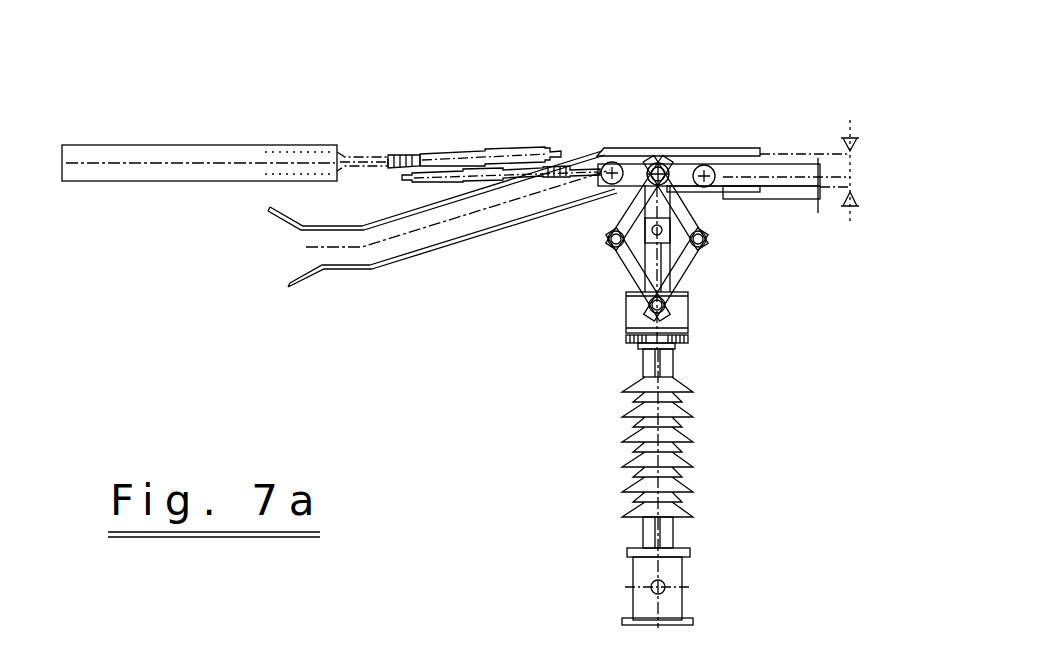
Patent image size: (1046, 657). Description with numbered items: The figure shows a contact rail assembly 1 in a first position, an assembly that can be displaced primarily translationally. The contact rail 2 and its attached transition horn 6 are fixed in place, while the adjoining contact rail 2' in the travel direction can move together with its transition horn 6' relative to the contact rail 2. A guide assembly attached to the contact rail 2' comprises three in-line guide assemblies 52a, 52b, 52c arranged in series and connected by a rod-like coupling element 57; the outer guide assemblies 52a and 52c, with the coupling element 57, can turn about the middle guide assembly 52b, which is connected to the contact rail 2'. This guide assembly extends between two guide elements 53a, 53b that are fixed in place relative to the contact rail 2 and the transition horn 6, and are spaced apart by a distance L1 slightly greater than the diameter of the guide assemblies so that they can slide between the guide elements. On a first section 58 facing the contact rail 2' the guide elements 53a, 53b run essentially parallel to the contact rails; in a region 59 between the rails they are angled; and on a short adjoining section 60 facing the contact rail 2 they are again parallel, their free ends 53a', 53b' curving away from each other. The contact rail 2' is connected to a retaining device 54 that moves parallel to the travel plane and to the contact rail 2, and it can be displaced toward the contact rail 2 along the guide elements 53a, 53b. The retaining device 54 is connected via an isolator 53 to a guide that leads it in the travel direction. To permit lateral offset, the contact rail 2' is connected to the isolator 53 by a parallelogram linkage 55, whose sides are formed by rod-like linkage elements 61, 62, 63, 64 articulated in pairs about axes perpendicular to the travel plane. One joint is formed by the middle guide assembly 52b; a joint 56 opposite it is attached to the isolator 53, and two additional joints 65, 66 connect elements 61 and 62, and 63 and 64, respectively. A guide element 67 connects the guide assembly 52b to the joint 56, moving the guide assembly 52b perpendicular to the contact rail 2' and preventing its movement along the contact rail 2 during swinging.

The contact rail assembly 1 is at (411, 125).
The contact rail 2 is at (199, 272).
The contact rail 2' is at (758, 217).
The transition horn 6 is at (474, 94).
The transition horn 6' is at (462, 194).
The guide assembly 52a is at (760, 153).
The guide assembly 52b is at (673, 170).
The guide assembly 52c is at (605, 158).
The isolator 53 is at (670, 493).
The guide element 53a is at (483, 125).
The free end 53a' is at (282, 303).
The guide element 53b is at (493, 254).
The free end 53b' is at (336, 332).
The retaining device 54 is at (580, 362).
The parallelogram linkage 55 is at (717, 362).
The joint 56 is at (626, 334).
The coupling element 57 is at (693, 167).
The first section 58 is at (773, 158).
The region 59 is at (485, 216).
The section 60 is at (347, 256).
The linkage element 61 is at (675, 285).
The linkage element 62 is at (674, 212).
The linkage element 63 is at (624, 197).
The linkage element 64 is at (632, 267).
The joint 65 is at (675, 267).
The joint 66 is at (613, 247).
The guide element 67 is at (678, 297).
The distance L1 is at (866, 172).